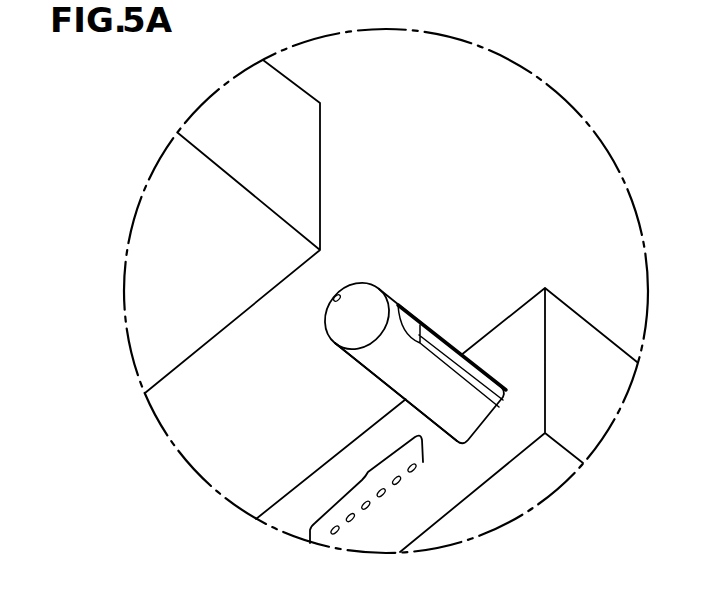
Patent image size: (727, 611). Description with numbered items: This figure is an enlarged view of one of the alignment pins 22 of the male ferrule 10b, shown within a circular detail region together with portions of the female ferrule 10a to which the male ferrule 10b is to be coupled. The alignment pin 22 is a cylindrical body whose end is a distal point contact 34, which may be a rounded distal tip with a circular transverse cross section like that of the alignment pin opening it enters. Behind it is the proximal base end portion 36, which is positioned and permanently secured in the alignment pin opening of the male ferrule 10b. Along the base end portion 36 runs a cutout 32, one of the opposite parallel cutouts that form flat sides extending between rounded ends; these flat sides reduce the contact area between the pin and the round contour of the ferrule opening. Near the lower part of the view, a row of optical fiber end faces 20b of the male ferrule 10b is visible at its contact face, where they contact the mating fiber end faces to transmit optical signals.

The female ferrule 10a is at (340, 133).
The male ferrule 10b is at (573, 280).
The alignment pin 22 is at (437, 300).
The cutout 32 is at (452, 328).
The distal point contact 34 is at (363, 298).
The proximal base end portion 36 is at (378, 355).
The optical fiber end face 20b is at (366, 489).